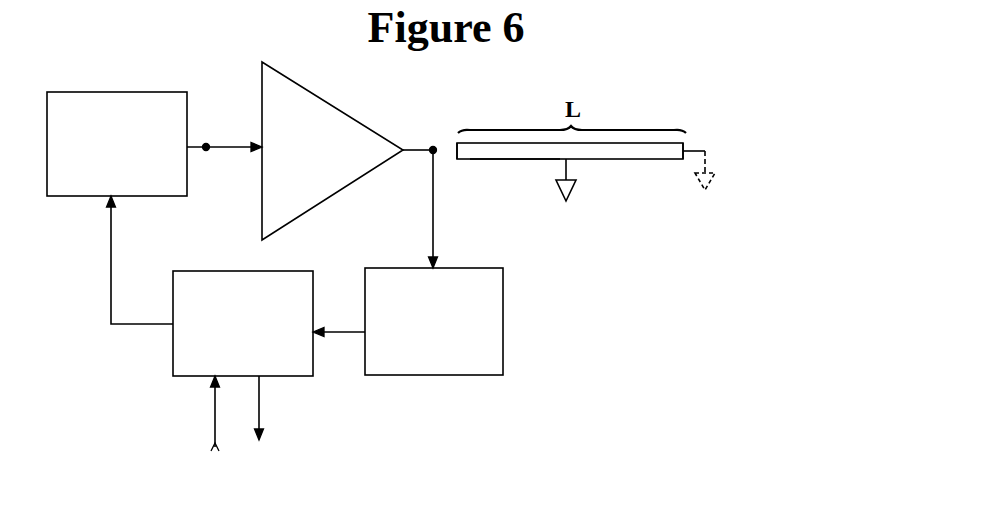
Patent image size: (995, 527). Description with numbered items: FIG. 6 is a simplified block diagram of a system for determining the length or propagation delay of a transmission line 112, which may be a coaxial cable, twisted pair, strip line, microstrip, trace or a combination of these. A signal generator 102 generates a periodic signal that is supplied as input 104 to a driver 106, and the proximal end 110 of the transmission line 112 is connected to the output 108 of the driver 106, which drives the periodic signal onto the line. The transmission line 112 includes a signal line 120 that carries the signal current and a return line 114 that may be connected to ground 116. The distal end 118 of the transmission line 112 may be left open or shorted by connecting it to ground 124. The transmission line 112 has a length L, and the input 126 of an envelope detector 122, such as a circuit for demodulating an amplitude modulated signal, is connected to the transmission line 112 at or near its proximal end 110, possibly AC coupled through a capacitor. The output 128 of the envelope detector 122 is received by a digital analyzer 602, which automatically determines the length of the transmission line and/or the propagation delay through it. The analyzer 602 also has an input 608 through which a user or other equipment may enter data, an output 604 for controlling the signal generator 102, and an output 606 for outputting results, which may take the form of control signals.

The signal generator 102 is at (145, 92).
The input 104 is at (230, 146).
The driver 106 is at (295, 82).
The output 108 is at (413, 152).
The proximal end 110 is at (424, 124).
The transmission line 112 is at (618, 172).
The return line 114 is at (513, 160).
The ground 116 is at (573, 195).
The distal end 118 is at (708, 135).
The signal line 120 is at (575, 123).
The envelope detector 122 is at (504, 313).
The ground 124 is at (705, 190).
The input 126 is at (433, 202).
The output 128 is at (343, 332).
The analyzer 602 is at (243, 272).
The output 604 is at (110, 272).
The output 606 is at (260, 407).
The input 608 is at (215, 407).